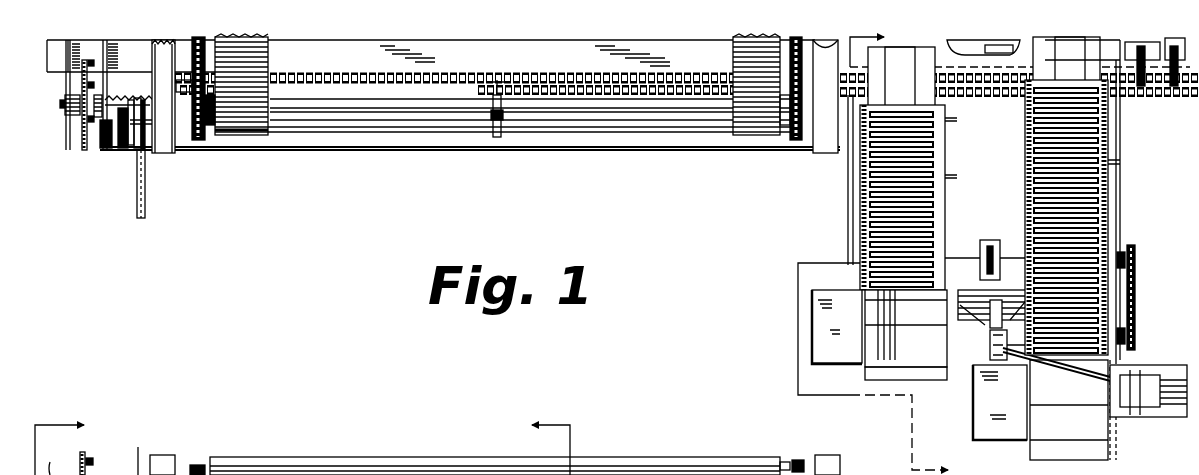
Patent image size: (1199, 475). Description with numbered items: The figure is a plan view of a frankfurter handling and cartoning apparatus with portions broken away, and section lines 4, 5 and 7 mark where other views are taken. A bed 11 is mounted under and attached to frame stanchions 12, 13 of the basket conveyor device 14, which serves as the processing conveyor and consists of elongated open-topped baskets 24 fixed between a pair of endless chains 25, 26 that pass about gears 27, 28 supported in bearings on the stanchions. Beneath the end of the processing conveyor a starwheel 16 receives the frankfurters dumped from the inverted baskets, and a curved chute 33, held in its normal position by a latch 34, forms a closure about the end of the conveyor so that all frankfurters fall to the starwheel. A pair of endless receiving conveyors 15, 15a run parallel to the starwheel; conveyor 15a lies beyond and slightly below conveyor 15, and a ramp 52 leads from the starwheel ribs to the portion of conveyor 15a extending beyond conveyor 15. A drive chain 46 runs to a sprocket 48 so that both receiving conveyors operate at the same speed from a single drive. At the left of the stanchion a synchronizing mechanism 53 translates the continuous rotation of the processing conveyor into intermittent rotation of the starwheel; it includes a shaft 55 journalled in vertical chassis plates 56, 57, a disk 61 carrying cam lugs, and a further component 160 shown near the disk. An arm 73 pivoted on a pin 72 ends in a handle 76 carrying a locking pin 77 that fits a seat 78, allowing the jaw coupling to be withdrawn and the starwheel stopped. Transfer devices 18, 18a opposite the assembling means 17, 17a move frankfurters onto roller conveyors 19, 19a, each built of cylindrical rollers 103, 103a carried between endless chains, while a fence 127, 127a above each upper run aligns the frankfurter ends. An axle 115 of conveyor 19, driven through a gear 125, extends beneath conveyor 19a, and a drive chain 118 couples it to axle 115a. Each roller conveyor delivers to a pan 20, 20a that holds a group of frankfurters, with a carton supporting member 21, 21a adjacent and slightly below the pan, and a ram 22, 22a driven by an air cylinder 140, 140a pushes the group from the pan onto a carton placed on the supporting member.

The section line 4 is at (994, 256).
The section line 5 is at (49, 447).
The section line 7 is at (560, 447).
The bed 11 is at (46, 74).
The frame stanchion 12 is at (162, 153).
The frame stanchion 13 is at (830, 153).
The basket conveyor device 14 is at (272, 57).
The receiving conveyor 15 is at (559, 98).
The receiving conveyor 15a is at (407, 86).
The starwheel 16 is at (645, 135).
The assembling means 17 is at (952, 189).
The assembling means 17a is at (1112, 185).
The transfer device 18 is at (913, 93).
The transfer device 18a is at (1026, 107).
The roller conveyor 19 is at (858, 208).
The roller conveyor 19a is at (1116, 205).
The pan 20 is at (925, 353).
The pan 20a is at (1094, 431).
The carton supporting member 21 is at (812, 336).
The carton supporting member 21a is at (974, 395).
The ram 22 is at (905, 338).
The ram 22a is at (1120, 452).
The basket 24 is at (457, 474).
The endless chain 25 is at (203, 140).
The endless chain 26 is at (796, 142).
The gear 27 is at (228, 132).
The gear 28 is at (782, 130).
The curved chute 33 is at (333, 136).
The latch 34 is at (497, 138).
The drive chain 46 is at (1134, 88).
The sprocket 48 is at (1168, 88).
The ramp 52 is at (323, 110).
The synchronizing mechanism 53 is at (64, 118).
The shaft 55 is at (128, 92).
The vertical chassis plate 56 is at (68, 116).
The vertical chassis plate 57 is at (104, 148).
The disk 61 is at (84, 150).
The pin 72 is at (132, 148).
The arm 73 is at (134, 224).
The handle 76 is at (146, 214).
The locking pin 77 is at (140, 178).
The seat 78 is at (148, 170).
The cylindrical roller 103 is at (946, 208).
The slat 103a is at (1110, 223).
The axle 115 is at (976, 258).
The axle 115a is at (1126, 326).
The drive chain 118 is at (1136, 292).
The gear 125 is at (1000, 240).
The fence 127 is at (944, 162).
The chain 127a is at (1110, 141).
The air cylinder 140 is at (968, 290).
The motor 140a is at (1178, 418).
The cam 160 is at (109, 463).